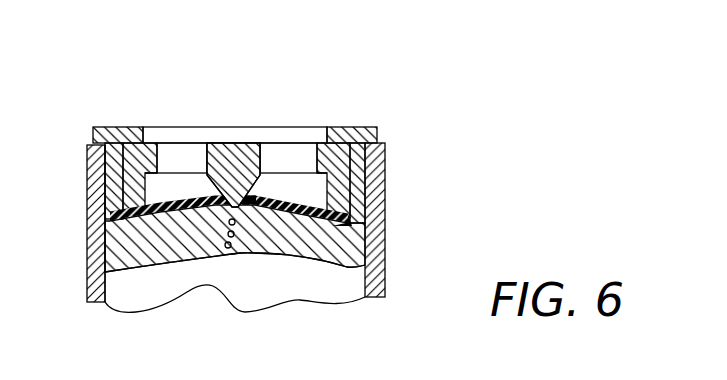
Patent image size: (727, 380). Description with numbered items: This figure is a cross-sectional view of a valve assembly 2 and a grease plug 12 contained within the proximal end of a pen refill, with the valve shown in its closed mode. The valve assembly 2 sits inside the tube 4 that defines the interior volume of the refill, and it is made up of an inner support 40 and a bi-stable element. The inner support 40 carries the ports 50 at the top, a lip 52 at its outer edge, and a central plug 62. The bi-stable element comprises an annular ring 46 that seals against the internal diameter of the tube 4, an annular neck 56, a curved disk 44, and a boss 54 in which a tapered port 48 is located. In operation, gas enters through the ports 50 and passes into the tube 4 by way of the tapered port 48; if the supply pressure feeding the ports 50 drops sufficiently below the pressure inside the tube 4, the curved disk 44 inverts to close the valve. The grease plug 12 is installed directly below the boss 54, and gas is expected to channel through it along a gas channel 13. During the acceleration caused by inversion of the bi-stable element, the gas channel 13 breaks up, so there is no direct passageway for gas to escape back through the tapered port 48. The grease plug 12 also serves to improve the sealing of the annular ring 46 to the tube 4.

The valve assembly 2 is at (346, 68).
The tube 4 is at (385, 240).
The grease plug 12 is at (349, 244).
The gas channel 13 is at (235, 209).
The inner support 40 is at (252, 144).
The curved disk 44 is at (176, 206).
The annular ring 46 is at (385, 174).
The tapered port 48 is at (213, 201).
The ports 50 is at (183, 153).
The lip 52 is at (93, 128).
The boss 54 is at (289, 230).
The annular neck 56 is at (102, 238).
The plug 62 is at (244, 212).